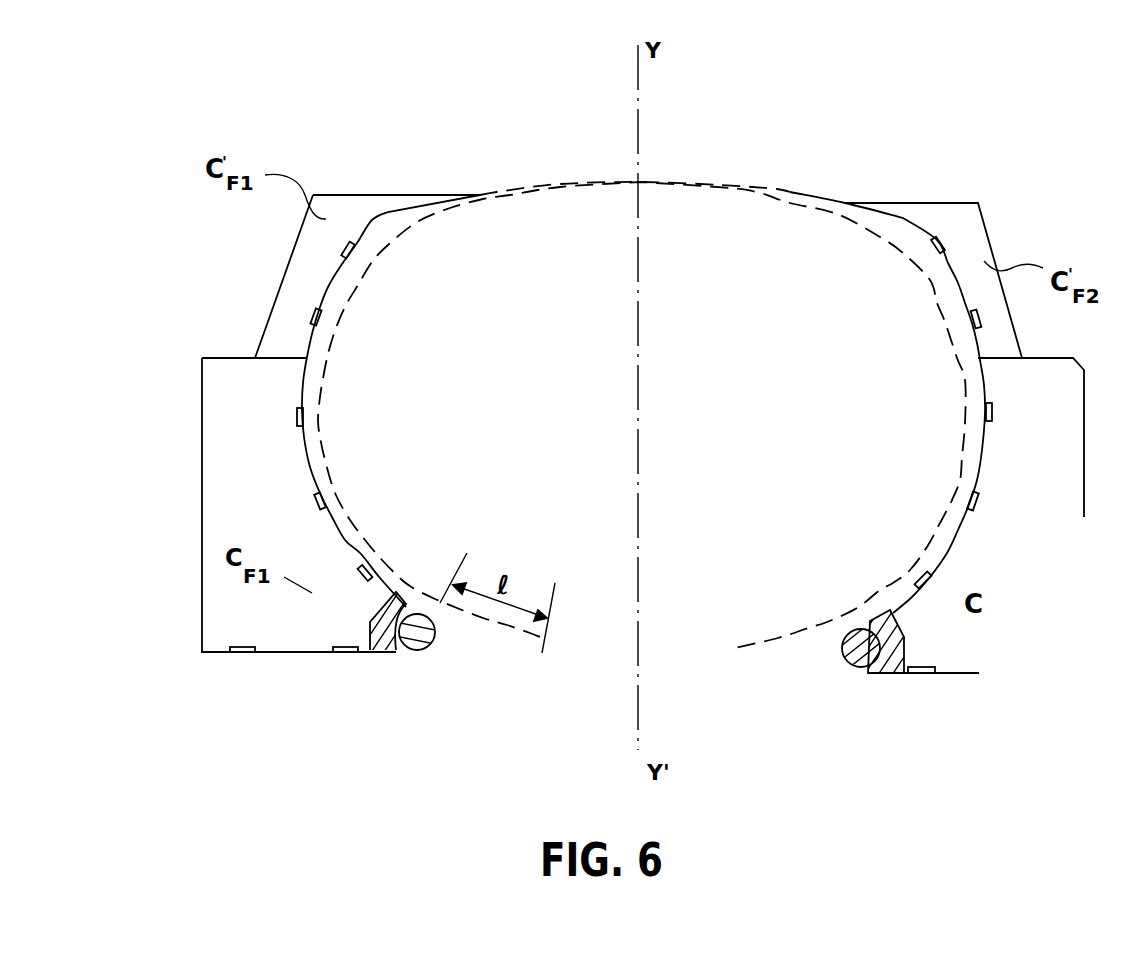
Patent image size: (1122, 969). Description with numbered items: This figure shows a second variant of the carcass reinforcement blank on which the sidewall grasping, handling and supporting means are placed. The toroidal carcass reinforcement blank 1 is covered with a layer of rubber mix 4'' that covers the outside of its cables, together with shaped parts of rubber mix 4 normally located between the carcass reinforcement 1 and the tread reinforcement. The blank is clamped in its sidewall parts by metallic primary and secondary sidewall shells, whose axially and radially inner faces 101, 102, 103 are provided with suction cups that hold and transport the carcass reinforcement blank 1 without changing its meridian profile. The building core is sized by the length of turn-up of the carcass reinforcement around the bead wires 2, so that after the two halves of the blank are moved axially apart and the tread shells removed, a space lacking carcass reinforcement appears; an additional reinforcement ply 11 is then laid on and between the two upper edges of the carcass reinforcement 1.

The toroidal carcass reinforcement blank 1 is at (358, 302).
The bead wire 2 is at (420, 642).
The shaped parts of rubber mix 4 is at (736, 397).
The layer of rubber mix 4'' is at (928, 443).
The additional reinforcement ply 11 is at (847, 203).
The axially and radially inner face of shell 101 is at (294, 652).
The axially and radially inner face of shell 102 is at (314, 479).
The axially and radially inner face of shell 103 is at (336, 283).